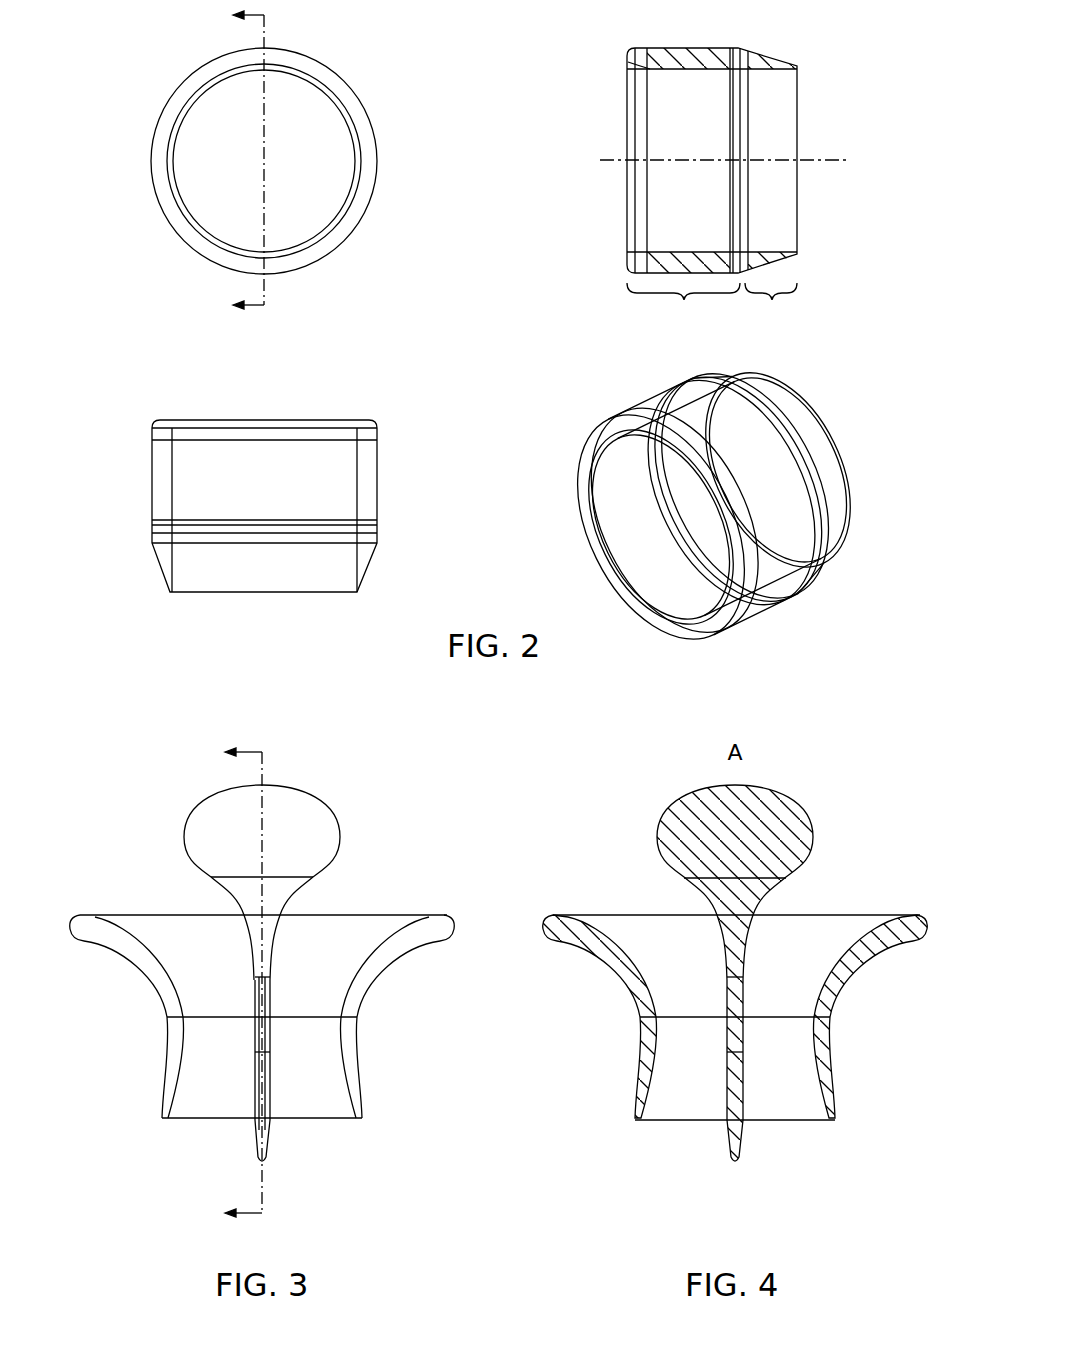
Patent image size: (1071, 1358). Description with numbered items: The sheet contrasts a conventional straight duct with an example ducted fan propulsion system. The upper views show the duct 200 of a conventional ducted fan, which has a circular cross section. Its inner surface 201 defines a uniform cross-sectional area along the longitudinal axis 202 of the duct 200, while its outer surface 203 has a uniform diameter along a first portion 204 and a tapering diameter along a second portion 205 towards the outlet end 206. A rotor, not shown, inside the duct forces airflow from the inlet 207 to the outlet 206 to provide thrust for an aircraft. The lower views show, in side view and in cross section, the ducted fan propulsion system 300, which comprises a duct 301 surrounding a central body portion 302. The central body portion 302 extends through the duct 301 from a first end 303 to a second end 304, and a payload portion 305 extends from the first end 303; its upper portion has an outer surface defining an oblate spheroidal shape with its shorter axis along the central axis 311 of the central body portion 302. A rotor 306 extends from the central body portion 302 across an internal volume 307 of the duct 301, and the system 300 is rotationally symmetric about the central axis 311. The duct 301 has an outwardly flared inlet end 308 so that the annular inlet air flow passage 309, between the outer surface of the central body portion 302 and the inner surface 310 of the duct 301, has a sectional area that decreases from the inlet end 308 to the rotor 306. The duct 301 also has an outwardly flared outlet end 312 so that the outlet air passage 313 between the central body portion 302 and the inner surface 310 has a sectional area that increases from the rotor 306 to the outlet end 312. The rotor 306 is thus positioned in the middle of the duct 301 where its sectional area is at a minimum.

In FIG. 2, the duct 200 is at (165, 58).
In FIG. 2, the inner surface 201 is at (662, 71).
In FIG. 2, the longitudinal axis 202 is at (831, 160).
In FIG. 2, the outer surface 203 is at (693, 48).
In FIG. 2, the first portion 204 is at (712, 195).
In FIG. 2, the second portion 205 is at (771, 197).
In FIG. 2, the outlet end 206 is at (836, 212).
In FIG. 2, the inlet 207 is at (598, 208).
In FIG. 3, the ducted fan propulsion system 300 is at (267, 992).
In FIG. 3, the duct 301 is at (158, 996).
In FIG. 4, the duct 301 is at (828, 1031).
In FIG. 3, the central body portion 302 is at (250, 967).
In FIG. 4, the central body portion 302 is at (745, 1140).
In FIG. 3, the first end 303 is at (232, 906).
In FIG. 3, the second end 304 is at (252, 1136).
In FIG. 3, the payload portion 305 is at (336, 814).
In FIG. 4, the payload portion 305 is at (800, 806).
In FIG. 3, the rotor 306 is at (293, 1010).
In FIG. 4, the rotor 306 is at (762, 1015).
In FIG. 3, the internal volume 307 is at (237, 969).
In FIG. 3, the inlet end 308 is at (88, 913).
In FIG. 4, the inlet end 308 is at (916, 913).
In FIG. 3, the annular inlet air flow passage 309 is at (378, 872).
In FIG. 3, the inner surface 310 is at (380, 937).
In FIG. 3, the central axis 311 is at (268, 1200).
In FIG. 3, the outlet end 312 is at (351, 1125).
In FIG. 3, the outlet air passage 313 is at (190, 1106).